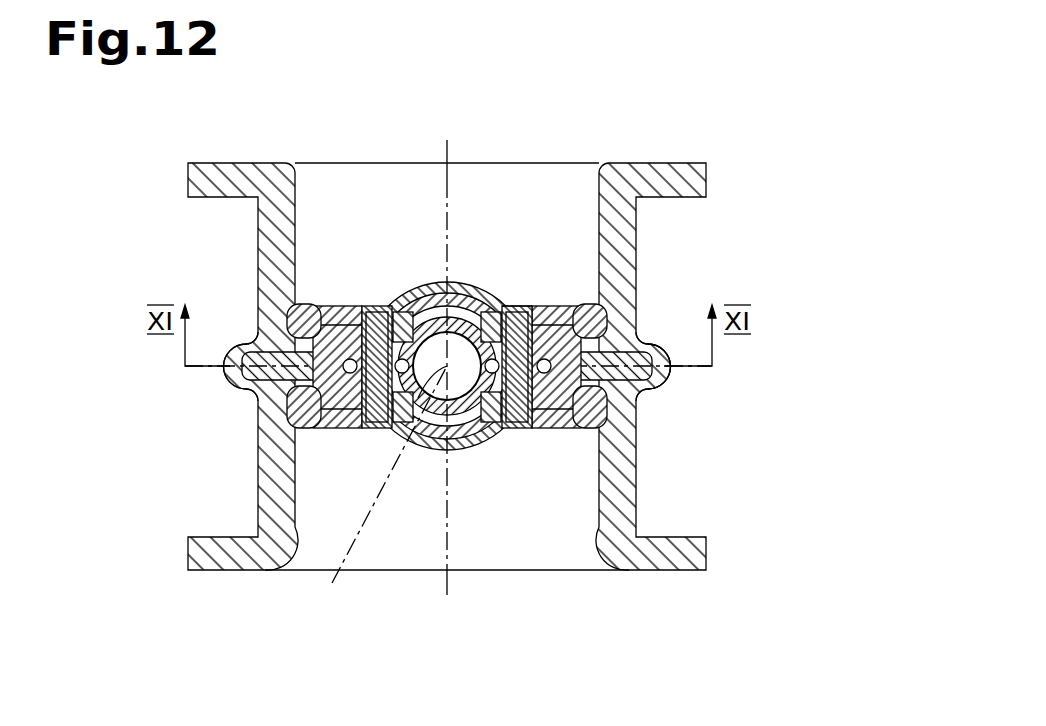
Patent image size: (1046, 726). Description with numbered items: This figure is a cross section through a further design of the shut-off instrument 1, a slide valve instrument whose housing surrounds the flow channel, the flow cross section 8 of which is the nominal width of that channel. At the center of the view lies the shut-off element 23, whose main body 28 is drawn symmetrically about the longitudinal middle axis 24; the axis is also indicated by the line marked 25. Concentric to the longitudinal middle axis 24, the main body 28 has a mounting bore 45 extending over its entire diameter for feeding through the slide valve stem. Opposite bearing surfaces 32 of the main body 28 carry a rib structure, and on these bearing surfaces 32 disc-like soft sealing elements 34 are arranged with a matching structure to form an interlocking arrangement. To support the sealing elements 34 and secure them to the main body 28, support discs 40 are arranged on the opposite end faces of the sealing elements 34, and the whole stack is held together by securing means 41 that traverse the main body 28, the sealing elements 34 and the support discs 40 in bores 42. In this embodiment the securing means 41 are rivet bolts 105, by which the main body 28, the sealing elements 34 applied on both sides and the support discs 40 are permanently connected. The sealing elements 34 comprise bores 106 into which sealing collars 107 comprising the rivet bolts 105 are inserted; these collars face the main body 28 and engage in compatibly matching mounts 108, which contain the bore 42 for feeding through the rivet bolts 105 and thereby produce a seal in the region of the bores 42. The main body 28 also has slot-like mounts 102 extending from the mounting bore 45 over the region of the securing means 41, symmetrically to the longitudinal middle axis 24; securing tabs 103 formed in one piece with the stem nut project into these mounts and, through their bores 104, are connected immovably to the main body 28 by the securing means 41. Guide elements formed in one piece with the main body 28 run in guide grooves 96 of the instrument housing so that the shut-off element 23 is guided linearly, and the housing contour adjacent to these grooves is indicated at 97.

The shut-off instrument 1 is at (750, 113).
The flow cross section 8 is at (520, 553).
The shut-off element 23 is at (440, 172).
The longitudinal middle axis 24 is at (380, 493).
The direction of rotation 25 is at (446, 582).
The main body 28 is at (483, 312).
The bearing surfaces 32 is at (328, 305).
The sealing elements 34 is at (455, 286).
The support discs 40 is at (443, 284).
The securing means 41 is at (357, 262).
The bores 42 is at (605, 347).
The mounting bore 45 is at (420, 440).
The guide grooves 96 is at (668, 352).
The fillet 97 is at (246, 392).
The slot-like mounts 102 is at (377, 430).
The securing tabs 103 is at (343, 425).
The bores 104 is at (387, 307).
The rivet bolts 105 is at (363, 303).
The bores 106 is at (523, 430).
The sealing collars 107 is at (541, 303).
The mounts 108 is at (548, 312).